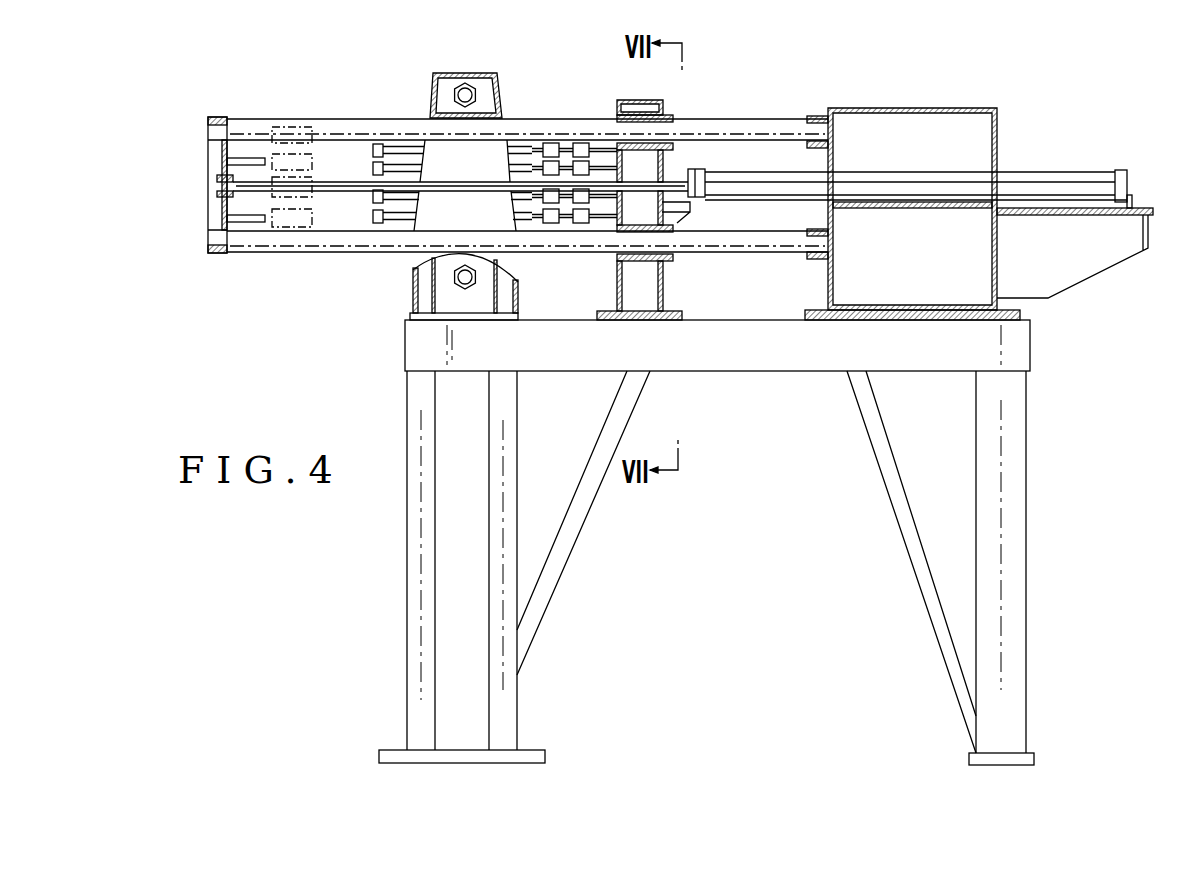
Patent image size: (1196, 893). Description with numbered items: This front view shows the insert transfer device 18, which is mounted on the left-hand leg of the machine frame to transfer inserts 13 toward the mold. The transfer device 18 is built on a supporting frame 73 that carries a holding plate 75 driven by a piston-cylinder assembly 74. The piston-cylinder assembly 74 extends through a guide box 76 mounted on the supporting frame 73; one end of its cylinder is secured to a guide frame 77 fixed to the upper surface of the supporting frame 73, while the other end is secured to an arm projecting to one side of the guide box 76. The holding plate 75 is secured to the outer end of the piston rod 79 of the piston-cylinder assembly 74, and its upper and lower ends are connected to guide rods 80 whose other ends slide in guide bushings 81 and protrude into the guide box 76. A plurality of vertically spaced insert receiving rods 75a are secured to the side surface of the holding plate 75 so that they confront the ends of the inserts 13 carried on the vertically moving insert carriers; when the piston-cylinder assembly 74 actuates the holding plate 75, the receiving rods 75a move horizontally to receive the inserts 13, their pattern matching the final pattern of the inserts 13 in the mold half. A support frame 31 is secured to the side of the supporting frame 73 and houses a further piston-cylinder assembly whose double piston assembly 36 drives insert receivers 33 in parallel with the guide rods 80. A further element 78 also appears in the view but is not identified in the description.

The insert 13 is at (312, 162).
The insert transfer device 18 is at (730, 542).
The support frame 31 is at (433, 86).
The insert receiver 33 is at (553, 223).
The double piston assembly 36 is at (398, 164).
The supporting frame 73 is at (1032, 494).
The piston-cylinder assembly 74 is at (1057, 182).
The holding plate 75 is at (221, 243).
The insert receiving rods 75a is at (250, 158).
The guide box 76 is at (917, 108).
The guide frame 77 is at (626, 100).
The bracket 78 is at (1085, 268).
The piston rod 79 is at (600, 190).
The guide rods 80 is at (548, 128).
The guide bushings 81 is at (815, 116).